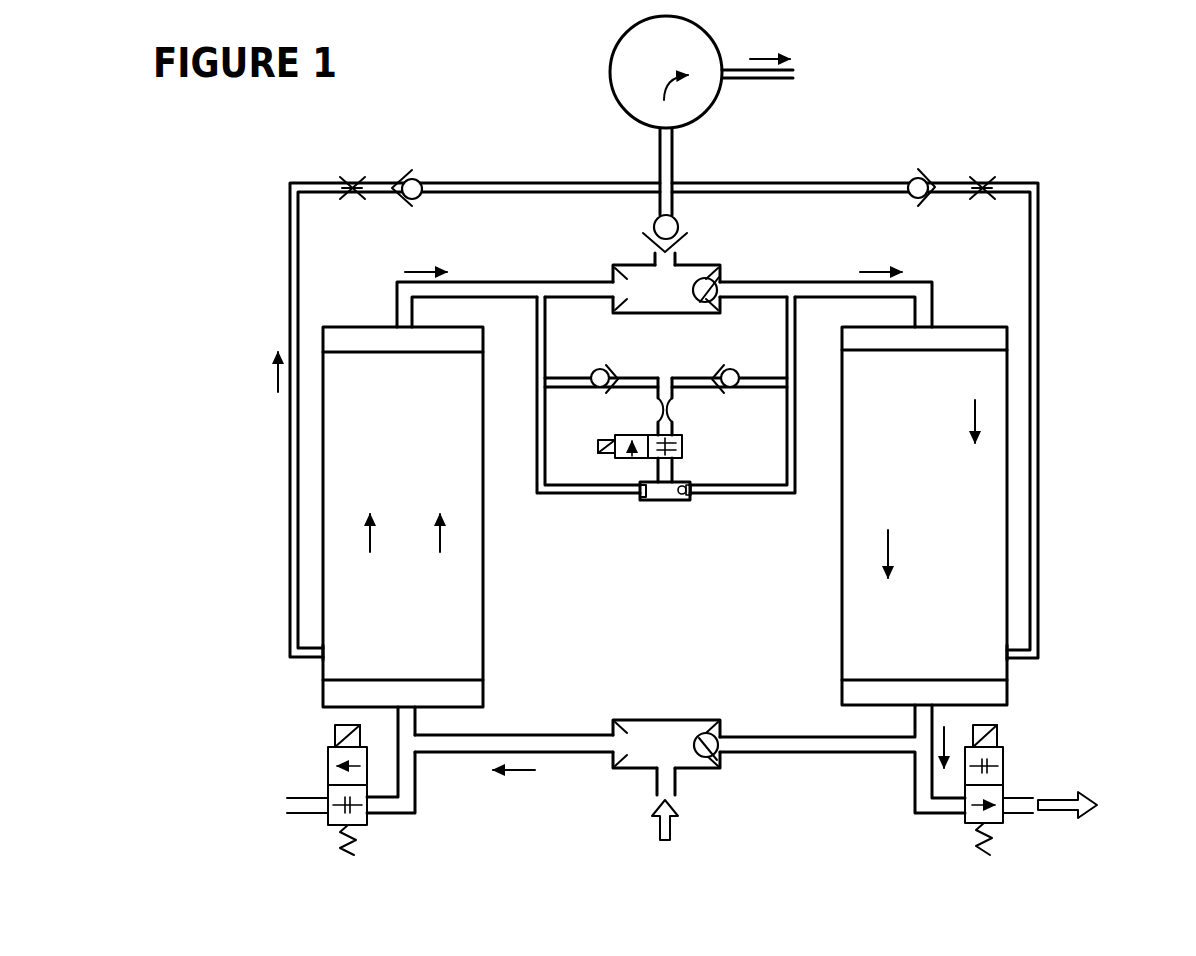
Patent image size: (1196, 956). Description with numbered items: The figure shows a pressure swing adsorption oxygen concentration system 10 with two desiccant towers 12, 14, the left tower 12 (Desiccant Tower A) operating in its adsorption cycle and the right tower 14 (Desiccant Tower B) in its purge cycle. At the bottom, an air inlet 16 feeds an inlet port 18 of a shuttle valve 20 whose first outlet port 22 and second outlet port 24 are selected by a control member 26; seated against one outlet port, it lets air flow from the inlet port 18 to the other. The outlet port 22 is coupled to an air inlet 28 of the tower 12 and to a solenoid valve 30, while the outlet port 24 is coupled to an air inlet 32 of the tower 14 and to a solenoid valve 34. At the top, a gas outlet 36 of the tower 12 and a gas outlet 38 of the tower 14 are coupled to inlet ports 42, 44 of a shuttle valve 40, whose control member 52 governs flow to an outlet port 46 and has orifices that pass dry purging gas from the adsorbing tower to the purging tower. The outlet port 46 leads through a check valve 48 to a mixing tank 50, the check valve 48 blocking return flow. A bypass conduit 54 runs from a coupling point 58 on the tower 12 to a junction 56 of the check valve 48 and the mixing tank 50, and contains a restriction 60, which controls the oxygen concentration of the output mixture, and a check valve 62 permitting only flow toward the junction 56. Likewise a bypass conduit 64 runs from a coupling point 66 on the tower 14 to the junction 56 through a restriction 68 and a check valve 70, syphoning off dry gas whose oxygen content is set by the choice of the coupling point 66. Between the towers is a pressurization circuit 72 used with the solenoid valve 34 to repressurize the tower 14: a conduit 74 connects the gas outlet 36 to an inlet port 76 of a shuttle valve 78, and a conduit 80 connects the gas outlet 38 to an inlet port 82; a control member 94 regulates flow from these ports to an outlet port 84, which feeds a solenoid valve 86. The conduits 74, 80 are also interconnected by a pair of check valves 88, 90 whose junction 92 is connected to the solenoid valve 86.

The oxygen concentration system 10 is at (1104, 176).
The desiccant tower 12 is at (485, 604).
The desiccant tower 14 is at (840, 602).
The air inlet 16 is at (677, 790).
The inlet port 18 is at (662, 772).
The shuttle valve 20 is at (652, 720).
The first outlet port 22 is at (619, 743).
The second outlet port 24 is at (722, 742).
The control member 26 is at (713, 756).
The air inlet 28 is at (398, 715).
The solenoid valve 30 is at (328, 779).
The air inlet 32 is at (932, 716).
The solenoid valve 34 is at (1003, 753).
The gas outlet 36 is at (397, 318).
The gas outlet 38 is at (935, 298).
The shuttle valve 40 is at (690, 254).
The inlet port 42 is at (617, 291).
The inlet port 44 is at (727, 282).
The outlet port 46 is at (652, 256).
The check valve 48 is at (645, 219).
The mixing tank 50 is at (610, 45).
The control member 52 is at (713, 288).
The bypass conduit 54 is at (290, 475).
The junction 56 is at (681, 191).
The coupling point 58 is at (330, 653).
The restriction 60 is at (350, 183).
The check valve 62 is at (418, 178).
The bypass conduit 64 is at (1045, 254).
The coupling point 66 is at (1005, 650).
The restriction 68 is at (982, 180).
The check valve 70 is at (912, 180).
The pressurization circuit 72 is at (620, 523).
The conduit 74 is at (540, 340).
The inlet port 76 is at (637, 490).
The shuttle valve 78 is at (655, 501).
The conduit 80 is at (798, 320).
The inlet port 82 is at (691, 494).
The outlet port 84 is at (654, 472).
The solenoid valve 86 is at (686, 447).
The check valve 88 is at (598, 370).
The check valve 90 is at (737, 370).
The junction 92 is at (665, 378).
The control member 94 is at (684, 496).